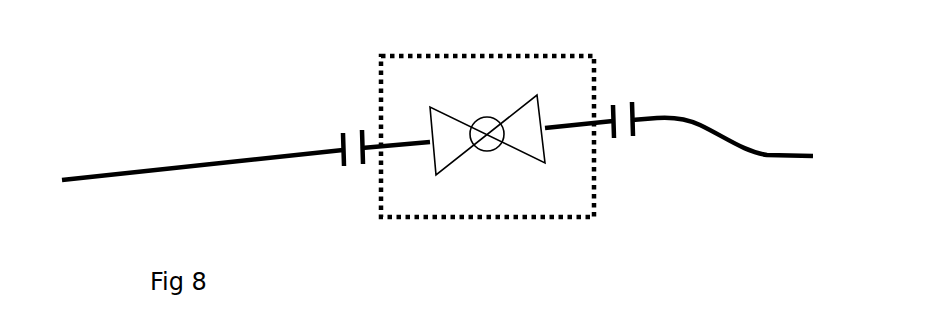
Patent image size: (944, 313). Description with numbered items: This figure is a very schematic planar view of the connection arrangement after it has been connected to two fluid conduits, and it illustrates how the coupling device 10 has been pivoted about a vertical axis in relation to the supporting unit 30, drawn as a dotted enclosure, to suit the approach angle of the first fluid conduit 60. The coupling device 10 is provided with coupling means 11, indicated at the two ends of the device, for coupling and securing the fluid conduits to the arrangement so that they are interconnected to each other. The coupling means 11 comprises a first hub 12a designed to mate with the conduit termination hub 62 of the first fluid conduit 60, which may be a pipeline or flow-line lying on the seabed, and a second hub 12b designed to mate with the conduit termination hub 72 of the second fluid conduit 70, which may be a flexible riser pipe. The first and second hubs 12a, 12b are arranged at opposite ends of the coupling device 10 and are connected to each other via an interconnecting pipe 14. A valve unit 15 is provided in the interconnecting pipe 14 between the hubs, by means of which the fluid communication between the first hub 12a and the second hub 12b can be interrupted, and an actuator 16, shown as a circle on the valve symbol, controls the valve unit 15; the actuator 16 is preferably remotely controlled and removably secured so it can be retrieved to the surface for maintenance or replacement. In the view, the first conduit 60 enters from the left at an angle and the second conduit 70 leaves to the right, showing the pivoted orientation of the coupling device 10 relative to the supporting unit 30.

The coupling device 10 is at (487, 98).
The coupling means 11 is at (372, 170).
The first hub 12a is at (366, 130).
The second hub 12b is at (605, 109).
The interconnecting pipe 14 is at (566, 124).
The valve unit 15 is at (448, 153).
The actuator 16 is at (498, 152).
The supporting unit 30 is at (540, 219).
The first fluid conduit 60 is at (193, 168).
The conduit termination hub 62 is at (340, 141).
The second fluid conduit 70 is at (771, 148).
The conduit termination hub 72 is at (637, 108).